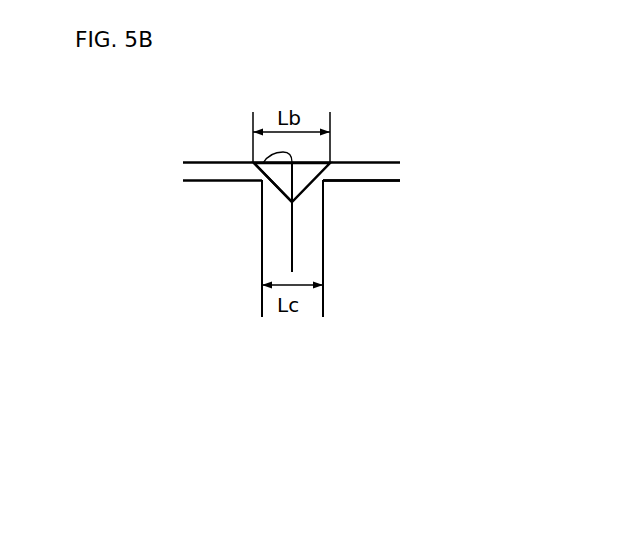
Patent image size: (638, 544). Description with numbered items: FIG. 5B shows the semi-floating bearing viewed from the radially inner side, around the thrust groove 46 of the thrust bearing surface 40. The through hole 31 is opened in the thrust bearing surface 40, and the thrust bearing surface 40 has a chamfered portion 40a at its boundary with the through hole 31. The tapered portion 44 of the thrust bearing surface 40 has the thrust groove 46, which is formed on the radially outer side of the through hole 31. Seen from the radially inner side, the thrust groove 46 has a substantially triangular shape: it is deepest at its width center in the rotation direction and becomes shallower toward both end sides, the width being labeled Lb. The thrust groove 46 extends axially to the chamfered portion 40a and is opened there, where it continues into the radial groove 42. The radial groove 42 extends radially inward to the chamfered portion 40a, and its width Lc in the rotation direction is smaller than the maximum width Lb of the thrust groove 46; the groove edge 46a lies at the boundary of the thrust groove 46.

The thrust bearing surface 40 is at (189, 162).
The chamfered portion 40a is at (367, 168).
The tapered portion 44 is at (224, 162).
The thrust groove 46 is at (280, 182).
The weld toe 46a is at (257, 163).
The through hole 31 is at (367, 210).
The radial groove 42 is at (324, 235).